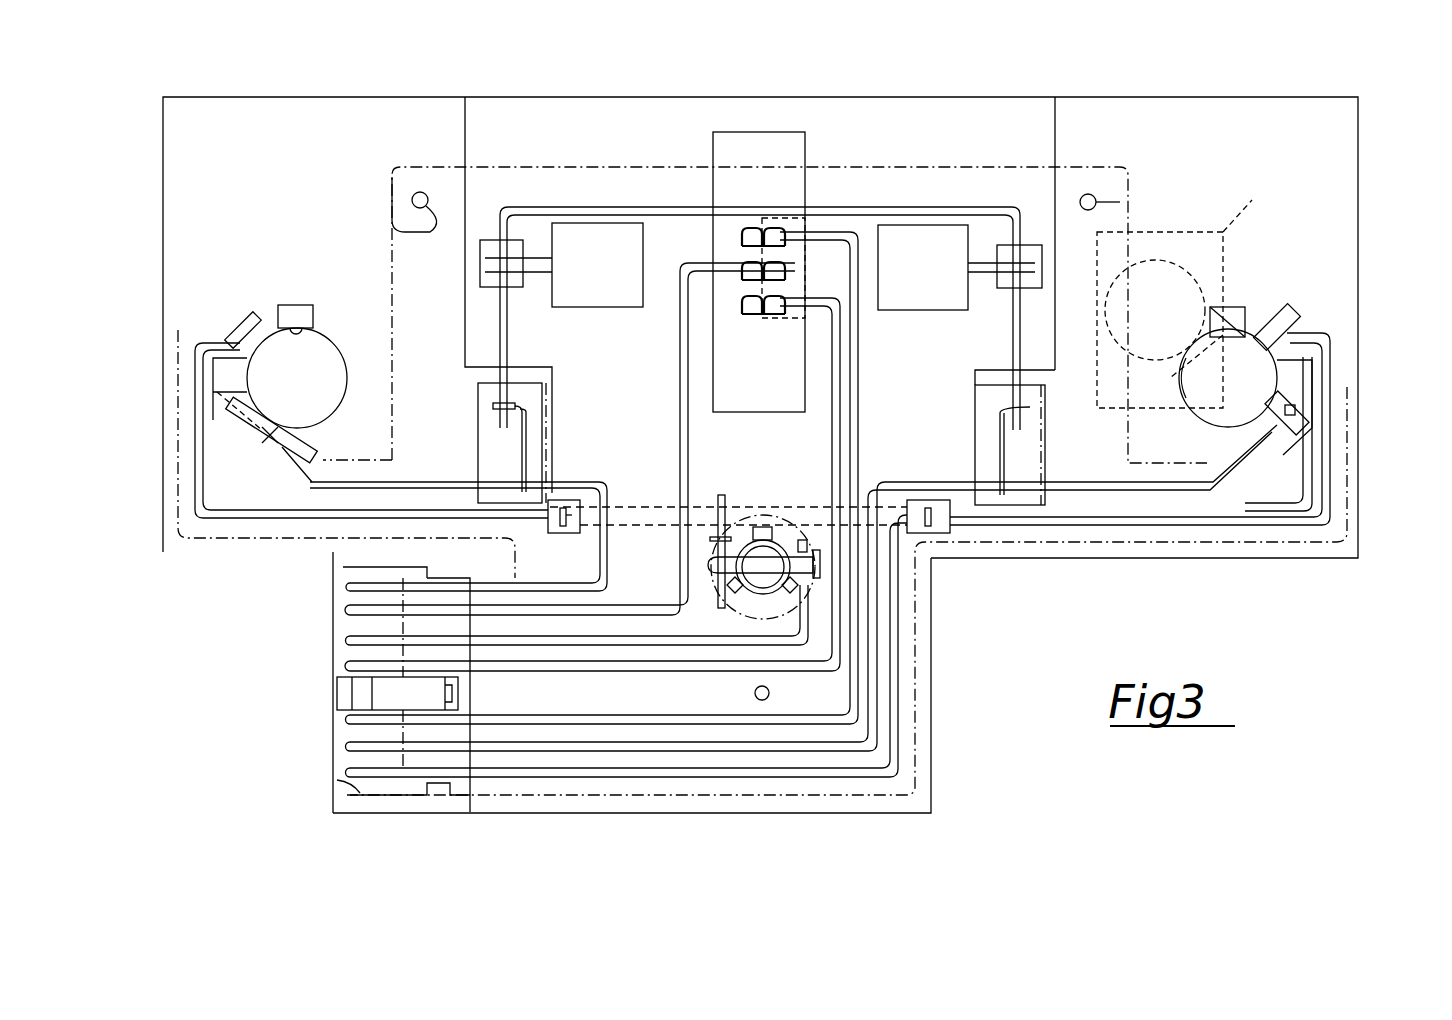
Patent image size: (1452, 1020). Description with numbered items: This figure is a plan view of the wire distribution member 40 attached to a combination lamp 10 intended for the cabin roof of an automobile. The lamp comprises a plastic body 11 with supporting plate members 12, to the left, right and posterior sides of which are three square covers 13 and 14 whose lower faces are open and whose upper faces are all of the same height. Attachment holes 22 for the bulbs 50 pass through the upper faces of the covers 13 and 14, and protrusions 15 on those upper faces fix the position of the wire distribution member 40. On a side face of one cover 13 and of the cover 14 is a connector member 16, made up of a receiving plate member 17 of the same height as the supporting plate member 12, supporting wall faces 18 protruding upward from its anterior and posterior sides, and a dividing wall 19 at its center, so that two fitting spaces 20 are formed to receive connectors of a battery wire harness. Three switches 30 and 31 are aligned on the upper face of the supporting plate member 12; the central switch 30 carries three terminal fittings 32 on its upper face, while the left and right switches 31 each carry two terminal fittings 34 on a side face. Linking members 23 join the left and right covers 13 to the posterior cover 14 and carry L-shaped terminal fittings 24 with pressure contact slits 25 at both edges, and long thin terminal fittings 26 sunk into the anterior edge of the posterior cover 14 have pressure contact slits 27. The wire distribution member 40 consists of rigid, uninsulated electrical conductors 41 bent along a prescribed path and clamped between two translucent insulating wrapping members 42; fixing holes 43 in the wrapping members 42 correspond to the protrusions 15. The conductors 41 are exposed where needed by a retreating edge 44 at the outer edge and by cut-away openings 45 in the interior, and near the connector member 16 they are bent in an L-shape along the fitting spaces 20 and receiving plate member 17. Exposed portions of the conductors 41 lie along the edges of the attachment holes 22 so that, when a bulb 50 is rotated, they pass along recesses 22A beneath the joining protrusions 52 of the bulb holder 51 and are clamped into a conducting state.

The combination lamp 10 is at (1379, 98).
The plastic body 11 is at (1063, 98).
The supporting plate member 12 is at (980, 122).
The cover 13 is at (300, 118).
The cover 14 is at (935, 786).
The protrusion 15 is at (420, 192).
The connector member 16 is at (310, 784).
The receiving plate member 17 is at (348, 622).
The supporting wall face 18 is at (345, 567).
The dividing wall 19 is at (390, 688).
The fitting space 20 is at (336, 606).
The attachment hole 22 is at (345, 345).
The recess 22A is at (298, 305).
The linking member 23 is at (548, 430).
The terminal fitting 24 is at (528, 455).
The pressure contact slit 25 is at (505, 405).
The terminal fitting 26 is at (652, 507).
The pressure contact slit 27 is at (562, 535).
The switch 30 is at (755, 145).
The switch 31 is at (622, 248).
The terminal fitting 32 is at (782, 230).
The terminal fitting 34 is at (503, 290).
The wire distribution member 40 is at (322, 200).
The electrical conductor 41 is at (262, 330).
The wrapping member 42 is at (590, 165).
The fixing hole 43 is at (378, 222).
The retreating edge 44 is at (178, 330).
The cut-away opening 45 is at (478, 458).
The bulb 50 is at (1225, 230).
The bulb holder 51 is at (758, 565).
The joining protrusion 52 is at (1282, 318).